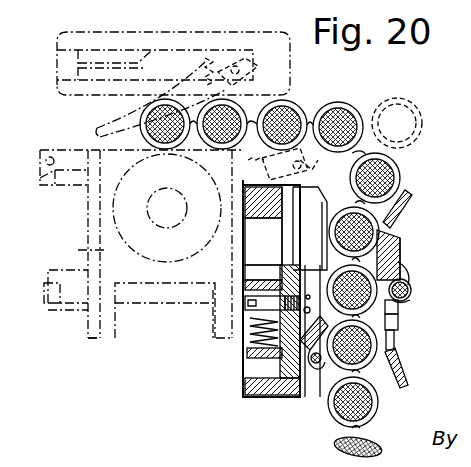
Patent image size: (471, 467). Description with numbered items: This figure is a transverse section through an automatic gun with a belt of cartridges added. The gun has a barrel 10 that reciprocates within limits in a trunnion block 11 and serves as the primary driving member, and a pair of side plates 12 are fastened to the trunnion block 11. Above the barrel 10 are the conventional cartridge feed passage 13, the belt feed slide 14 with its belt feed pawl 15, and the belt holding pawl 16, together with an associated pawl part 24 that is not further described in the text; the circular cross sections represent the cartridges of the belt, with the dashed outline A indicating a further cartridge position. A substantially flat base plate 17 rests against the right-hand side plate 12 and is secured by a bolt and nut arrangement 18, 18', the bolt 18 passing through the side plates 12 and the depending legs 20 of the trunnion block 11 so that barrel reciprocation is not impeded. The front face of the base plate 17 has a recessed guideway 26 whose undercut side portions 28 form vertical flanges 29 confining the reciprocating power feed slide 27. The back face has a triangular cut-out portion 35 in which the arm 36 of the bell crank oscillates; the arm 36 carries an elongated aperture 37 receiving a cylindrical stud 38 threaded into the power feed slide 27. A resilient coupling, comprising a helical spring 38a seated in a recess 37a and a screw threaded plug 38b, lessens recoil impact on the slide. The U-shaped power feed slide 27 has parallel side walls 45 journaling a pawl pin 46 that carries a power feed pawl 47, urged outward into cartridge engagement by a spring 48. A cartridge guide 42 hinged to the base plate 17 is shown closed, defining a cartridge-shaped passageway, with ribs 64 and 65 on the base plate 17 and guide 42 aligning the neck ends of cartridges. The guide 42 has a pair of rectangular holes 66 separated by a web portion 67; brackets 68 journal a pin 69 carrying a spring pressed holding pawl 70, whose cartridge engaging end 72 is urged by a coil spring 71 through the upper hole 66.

The belt feed slide 14 is at (138, 55).
The cartridge feed passage 13 is at (151, 99).
The belt feed pawl 15 is at (195, 78).
The wire coil position A is at (414, 108).
The side plate 12 is at (92, 218).
The trunnion block 11 is at (86, 249).
The barrel 10 is at (134, 178).
The cut-out portion 35 is at (243, 257).
The depending legs 20 is at (103, 336).
The bolt 18 is at (165, 310).
The nut 18' is at (66, 301).
The base plate 17 is at (243, 390).
The recessed guideway 26 is at (300, 216).
The side portions 28 is at (292, 236).
The power feed slide 27 is at (263, 243).
The vertical flanges 29 is at (322, 206).
The rib 64 is at (332, 252).
The arm 36 is at (263, 275).
The elongated aperture 37 is at (262, 302).
The cylindrical stud 38 is at (245, 302).
The recess 37a is at (252, 347).
The helical spring 38a is at (255, 362).
The screw threaded plug 38b is at (257, 396).
The pawl pin 46 is at (288, 395).
The power feed pawl 47 is at (312, 331).
The spring 48 is at (306, 402).
The side walls 45 is at (318, 396).
The rectangular holes 66 is at (396, 220).
The cartridge engaging end 72 is at (400, 246).
The holding pawl 70 is at (402, 256).
The brackets 68 is at (408, 276).
The pin 69 is at (412, 287).
The coil spring 71 is at (410, 297).
The web portion 67 is at (400, 312).
The rib 65 is at (398, 323).
The cartridge guide 42 is at (402, 374).
The belt holding pawl 16 is at (280, 165).
The pawl 24 is at (310, 172).